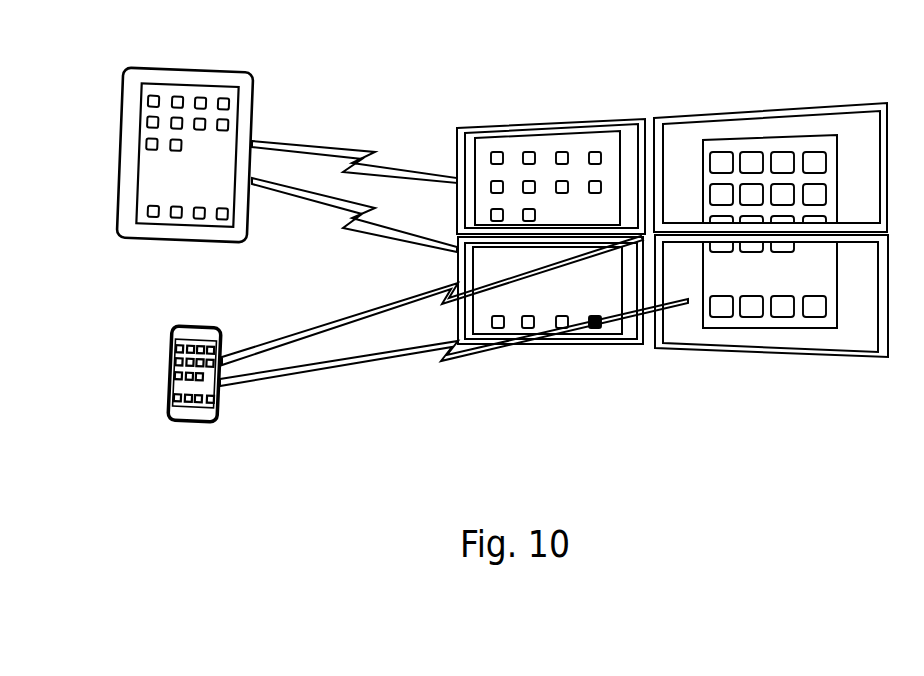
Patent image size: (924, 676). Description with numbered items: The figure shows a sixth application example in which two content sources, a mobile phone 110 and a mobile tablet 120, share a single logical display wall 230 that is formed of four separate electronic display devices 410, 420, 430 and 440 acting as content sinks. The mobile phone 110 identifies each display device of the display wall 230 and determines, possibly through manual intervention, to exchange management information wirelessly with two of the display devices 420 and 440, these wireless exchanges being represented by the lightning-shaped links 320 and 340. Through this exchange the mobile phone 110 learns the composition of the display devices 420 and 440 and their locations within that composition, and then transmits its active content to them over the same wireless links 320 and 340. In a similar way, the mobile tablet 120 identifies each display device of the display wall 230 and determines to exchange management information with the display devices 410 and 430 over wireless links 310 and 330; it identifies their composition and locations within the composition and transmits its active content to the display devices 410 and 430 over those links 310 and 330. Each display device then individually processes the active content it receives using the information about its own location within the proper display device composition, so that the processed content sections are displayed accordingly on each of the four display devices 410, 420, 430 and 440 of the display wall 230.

The mobile phone 110 is at (191, 330).
The mobile tablet 120 is at (170, 89).
The logical display wall 230 is at (639, 433).
The wireless exchange between mobile tablet and display device 310 is at (354, 171).
The wireless exchange between mobile phone and display device 320 is at (432, 300).
The wireless exchange between mobile tablet and display device 330 is at (354, 218).
The wireless exchange between mobile phone and display device 340 is at (454, 344).
The electronic display device 410 is at (533, 138).
The electronic display device 420 is at (748, 147).
The electronic display device 430 is at (588, 335).
The electronic display device 440 is at (780, 335).